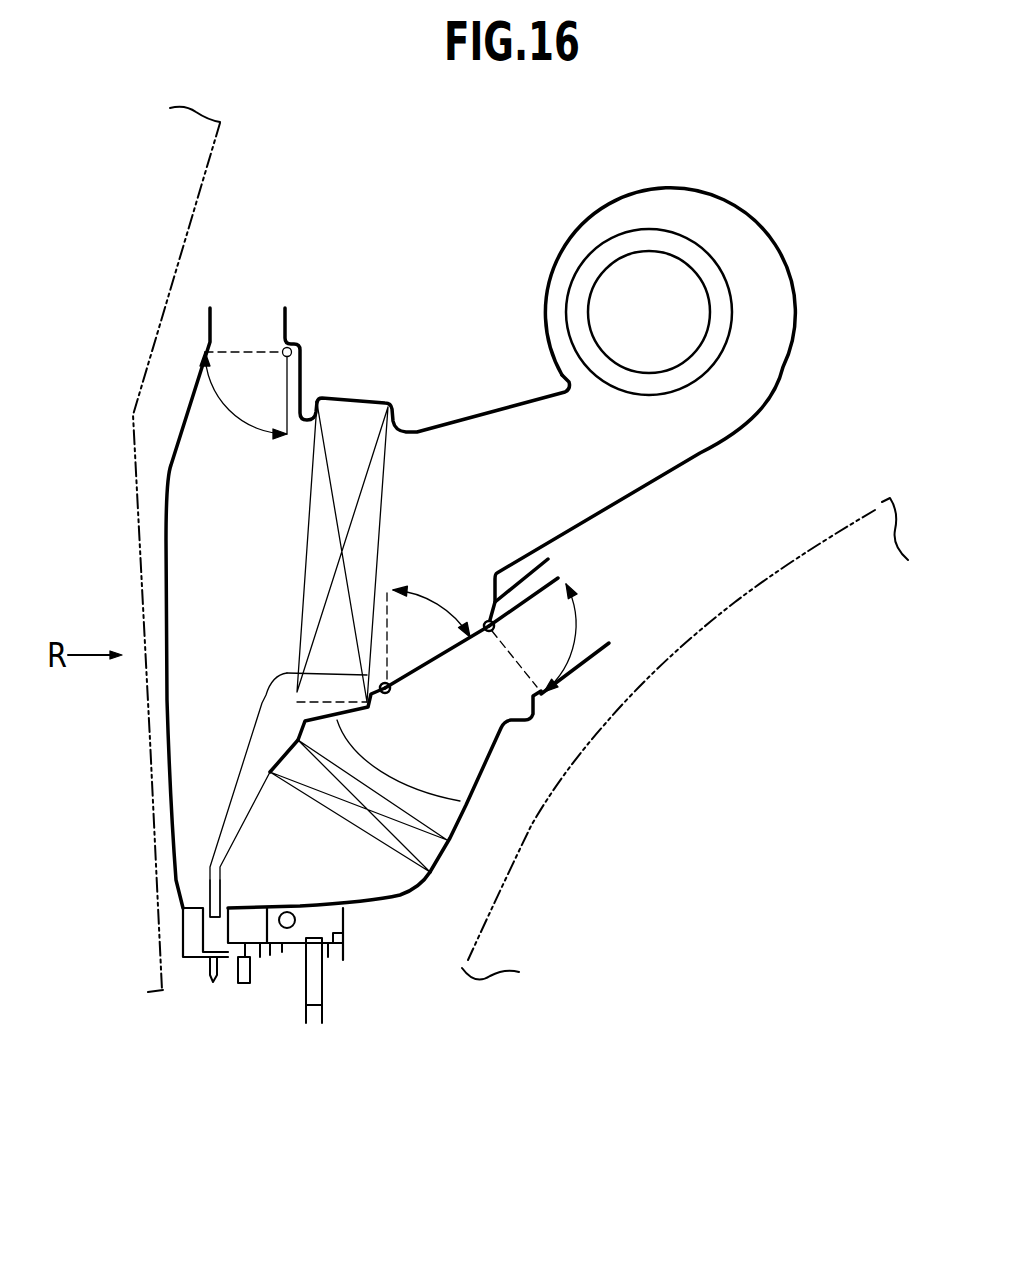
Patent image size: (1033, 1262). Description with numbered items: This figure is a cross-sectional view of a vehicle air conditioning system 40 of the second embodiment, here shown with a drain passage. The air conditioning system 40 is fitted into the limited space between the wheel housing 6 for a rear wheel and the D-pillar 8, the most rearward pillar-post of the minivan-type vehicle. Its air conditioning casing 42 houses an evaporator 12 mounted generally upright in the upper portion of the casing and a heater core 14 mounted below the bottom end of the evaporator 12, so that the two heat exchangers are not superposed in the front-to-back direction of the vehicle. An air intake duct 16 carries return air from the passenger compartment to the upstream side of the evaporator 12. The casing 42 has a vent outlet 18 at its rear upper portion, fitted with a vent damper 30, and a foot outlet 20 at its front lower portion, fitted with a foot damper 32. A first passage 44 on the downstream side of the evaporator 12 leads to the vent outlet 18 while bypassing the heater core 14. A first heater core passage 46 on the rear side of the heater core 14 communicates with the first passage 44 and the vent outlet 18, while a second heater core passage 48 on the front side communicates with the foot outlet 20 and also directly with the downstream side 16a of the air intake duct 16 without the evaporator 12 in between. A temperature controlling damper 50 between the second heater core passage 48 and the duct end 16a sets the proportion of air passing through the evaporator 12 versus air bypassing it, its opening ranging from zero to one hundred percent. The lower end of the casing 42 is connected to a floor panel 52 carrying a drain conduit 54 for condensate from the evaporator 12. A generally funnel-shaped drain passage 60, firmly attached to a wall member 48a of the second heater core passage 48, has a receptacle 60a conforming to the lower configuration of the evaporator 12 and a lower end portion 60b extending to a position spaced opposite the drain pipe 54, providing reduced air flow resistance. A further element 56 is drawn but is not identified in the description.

The wheel housing 6 is at (813, 538).
The D-pillar 8 is at (205, 172).
The evaporator 12 is at (385, 485).
The heater core 14 is at (298, 787).
The air intake duct 16 is at (795, 311).
The downstream side of the air intake duct 16a is at (445, 540).
The vent outlet 18 is at (267, 325).
The foot outlet 20 is at (544, 635).
The vent damper 30 is at (288, 383).
The foot damper 32 is at (531, 598).
The air conditioning system 40 is at (419, 283).
The air conditioning casing 42 is at (383, 900).
The first passage 44 is at (210, 527).
The first heater core passage 46 is at (350, 881).
The second heater core passage 48 is at (455, 750).
The wall member 48a is at (460, 801).
The temperature controlling damper 50 is at (442, 652).
The floor panel 52 is at (278, 947).
The drain conduit 54 is at (203, 970).
The shaft 56 is at (323, 987).
The drain passage 60 is at (250, 730).
The receptacle 60a is at (333, 690).
The lower end portion 60b is at (219, 892).